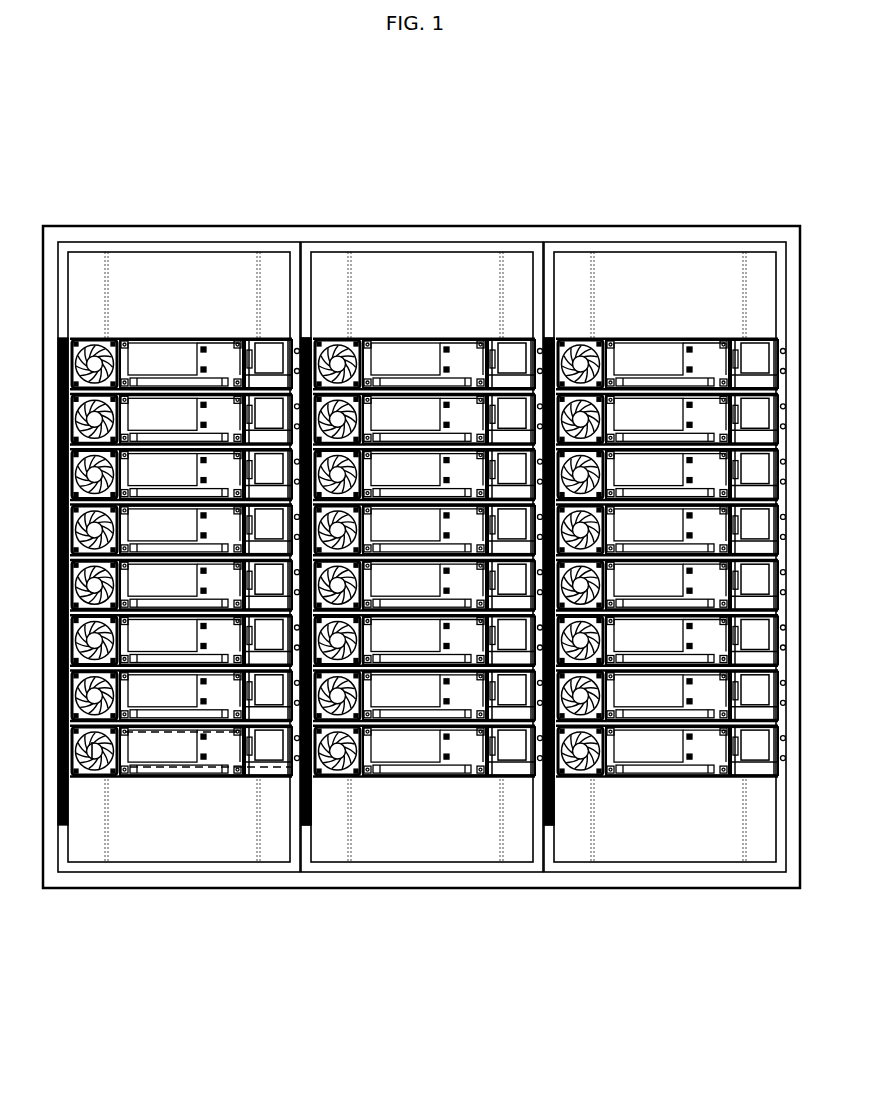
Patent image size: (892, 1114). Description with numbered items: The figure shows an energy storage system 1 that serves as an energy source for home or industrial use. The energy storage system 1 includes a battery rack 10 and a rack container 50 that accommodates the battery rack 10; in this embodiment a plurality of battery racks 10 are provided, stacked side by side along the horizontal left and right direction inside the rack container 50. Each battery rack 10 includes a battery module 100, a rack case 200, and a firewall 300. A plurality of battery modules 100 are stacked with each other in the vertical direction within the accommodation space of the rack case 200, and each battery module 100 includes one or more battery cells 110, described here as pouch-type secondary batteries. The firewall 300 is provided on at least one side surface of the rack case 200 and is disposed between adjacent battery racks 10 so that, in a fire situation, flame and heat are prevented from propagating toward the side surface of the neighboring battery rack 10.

The energy storage system 1 is at (171, 141).
The battery rack 10 is at (413, 237).
The rack container 50 is at (610, 225).
The battery module 100 is at (212, 770).
The battery cell 110 is at (164, 766).
The rack case 200 is at (92, 867).
The firewall 300 is at (307, 827).